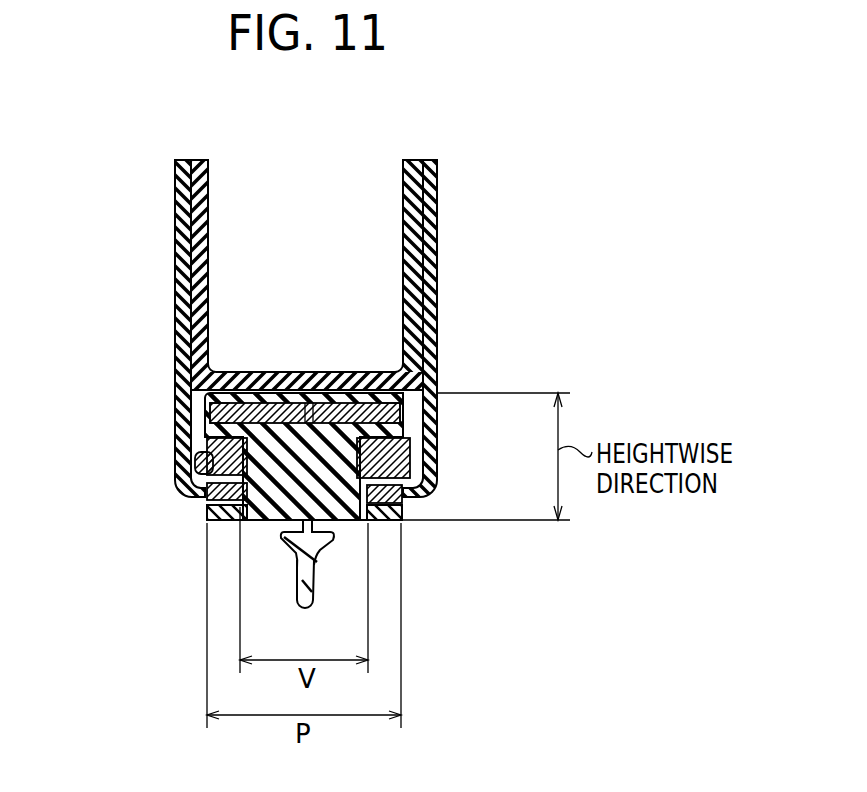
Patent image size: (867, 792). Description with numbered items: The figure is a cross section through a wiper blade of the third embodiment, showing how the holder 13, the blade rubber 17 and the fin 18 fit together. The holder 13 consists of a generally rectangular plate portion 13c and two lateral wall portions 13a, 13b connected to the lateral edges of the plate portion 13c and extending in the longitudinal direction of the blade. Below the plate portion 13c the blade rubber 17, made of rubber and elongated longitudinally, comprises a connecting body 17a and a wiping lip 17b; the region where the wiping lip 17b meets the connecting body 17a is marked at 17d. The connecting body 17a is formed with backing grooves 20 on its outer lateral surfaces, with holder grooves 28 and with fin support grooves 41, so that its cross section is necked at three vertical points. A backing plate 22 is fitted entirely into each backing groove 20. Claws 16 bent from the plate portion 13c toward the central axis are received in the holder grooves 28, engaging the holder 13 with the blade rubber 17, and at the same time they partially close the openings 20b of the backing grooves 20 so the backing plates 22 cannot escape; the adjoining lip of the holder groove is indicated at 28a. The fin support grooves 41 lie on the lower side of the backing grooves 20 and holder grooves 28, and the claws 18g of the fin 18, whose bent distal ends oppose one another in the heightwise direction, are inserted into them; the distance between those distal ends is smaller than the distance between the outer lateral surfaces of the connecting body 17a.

The holder 13 is at (412, 319).
The lateral wall portion 13a is at (208, 219).
The lateral wall portion 13b is at (405, 230).
The plate portion 13c is at (278, 372).
The claw 16 is at (405, 447).
The blade rubber 17 is at (205, 517).
The connecting body 17a is at (398, 522).
The wiping lip 17b is at (281, 575).
The projection base 17d is at (283, 540).
The fin 18 is at (437, 238).
The claw of the fin 18g is at (200, 505).
The backing groove 20 is at (337, 393).
The opening of the backing groove 20b is at (402, 410).
The backing plate 22 is at (210, 407).
The holder groove 28 is at (215, 443).
The clip lip 28a is at (212, 466).
The fin support groove 41 is at (210, 492).